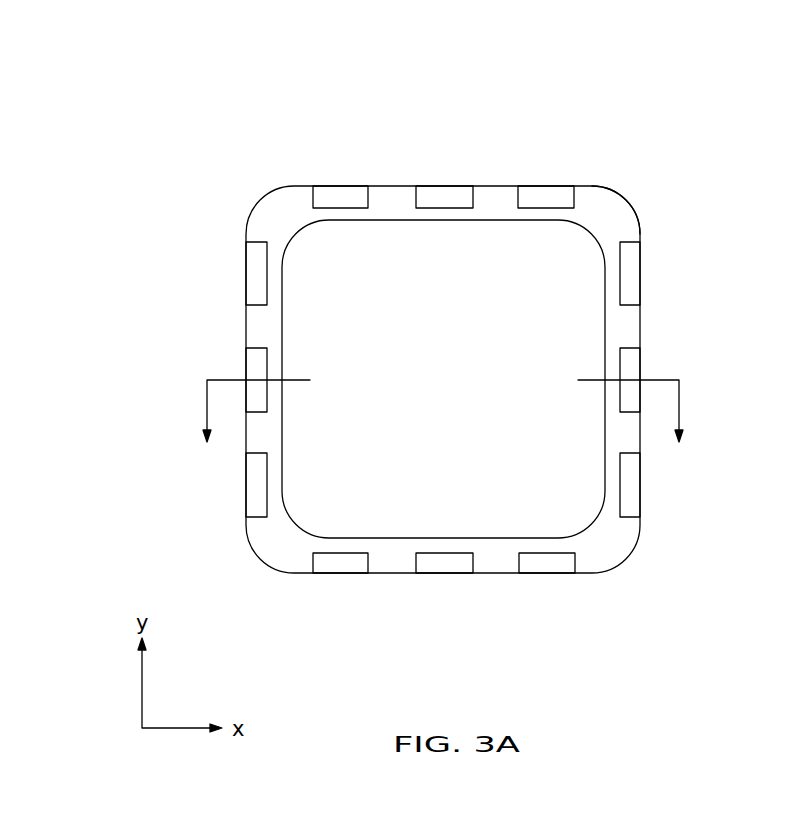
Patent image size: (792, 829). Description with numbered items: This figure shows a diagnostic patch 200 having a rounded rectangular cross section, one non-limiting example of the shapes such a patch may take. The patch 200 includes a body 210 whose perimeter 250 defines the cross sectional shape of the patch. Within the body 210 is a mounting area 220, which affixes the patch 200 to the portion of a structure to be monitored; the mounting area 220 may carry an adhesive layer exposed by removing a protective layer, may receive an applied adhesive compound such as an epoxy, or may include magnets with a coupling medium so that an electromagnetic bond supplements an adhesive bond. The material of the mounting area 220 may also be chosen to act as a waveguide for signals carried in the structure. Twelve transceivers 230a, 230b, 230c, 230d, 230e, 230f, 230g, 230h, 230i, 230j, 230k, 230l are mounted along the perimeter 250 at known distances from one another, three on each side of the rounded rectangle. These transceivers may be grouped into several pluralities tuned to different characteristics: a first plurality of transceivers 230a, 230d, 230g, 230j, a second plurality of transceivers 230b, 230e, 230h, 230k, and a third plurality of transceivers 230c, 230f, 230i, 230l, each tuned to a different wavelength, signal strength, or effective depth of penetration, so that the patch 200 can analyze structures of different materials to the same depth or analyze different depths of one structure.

The diagnostic patch 200 is at (248, 141).
The body 210 is at (603, 212).
The mounting area 220 is at (540, 482).
The perimeter 250 is at (638, 217).
The transceiver 230a is at (345, 200).
The transceiver 230b is at (445, 200).
The transceiver 230c is at (550, 200).
The transceiver 230d is at (632, 282).
The transceiver 230e is at (630, 362).
The transceiver 230f is at (630, 498).
The transceiver 230g is at (535, 565).
The transceiver 230h is at (430, 563).
The transceiver 230i is at (340, 570).
The transceiver 230j is at (255, 510).
The transceiver 230k is at (257, 363).
The transceiver 230l is at (255, 273).